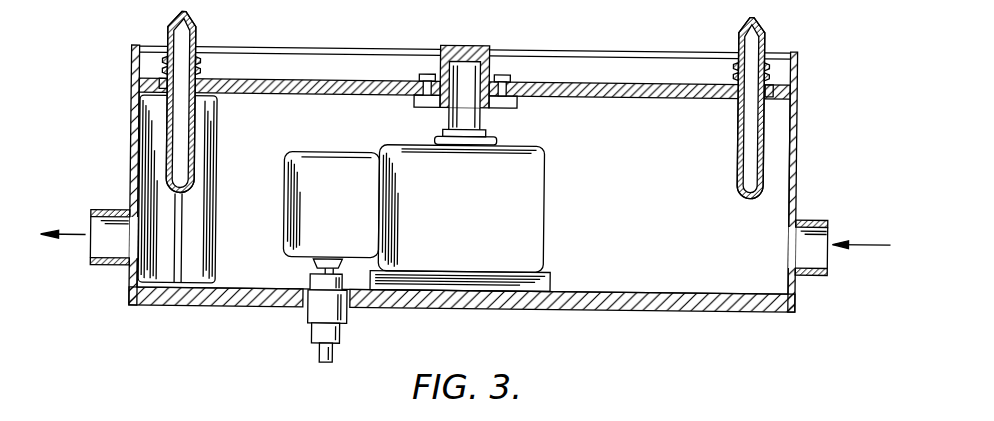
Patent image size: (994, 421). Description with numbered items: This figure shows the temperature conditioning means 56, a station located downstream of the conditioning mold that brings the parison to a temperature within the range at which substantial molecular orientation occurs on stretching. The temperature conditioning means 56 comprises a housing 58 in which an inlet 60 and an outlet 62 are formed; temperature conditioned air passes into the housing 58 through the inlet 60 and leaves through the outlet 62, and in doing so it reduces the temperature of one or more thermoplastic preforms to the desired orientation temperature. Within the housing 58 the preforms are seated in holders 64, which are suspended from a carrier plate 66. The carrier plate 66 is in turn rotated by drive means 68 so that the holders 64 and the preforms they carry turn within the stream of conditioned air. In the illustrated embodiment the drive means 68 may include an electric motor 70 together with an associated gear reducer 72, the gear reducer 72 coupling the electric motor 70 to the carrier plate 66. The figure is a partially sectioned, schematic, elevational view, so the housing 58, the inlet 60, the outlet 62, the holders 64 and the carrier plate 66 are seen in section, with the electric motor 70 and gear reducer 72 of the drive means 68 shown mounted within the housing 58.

The temperature conditioning means 56 is at (662, 28).
The housing 58 is at (320, 47).
The inlet 60 is at (807, 252).
The outlet 62 is at (108, 240).
The holders 64 is at (200, 66).
The carrier plate 66 is at (593, 82).
The drive means 68 is at (620, 263).
The electric motor 70 is at (317, 310).
The gear reducer 72 is at (522, 208).